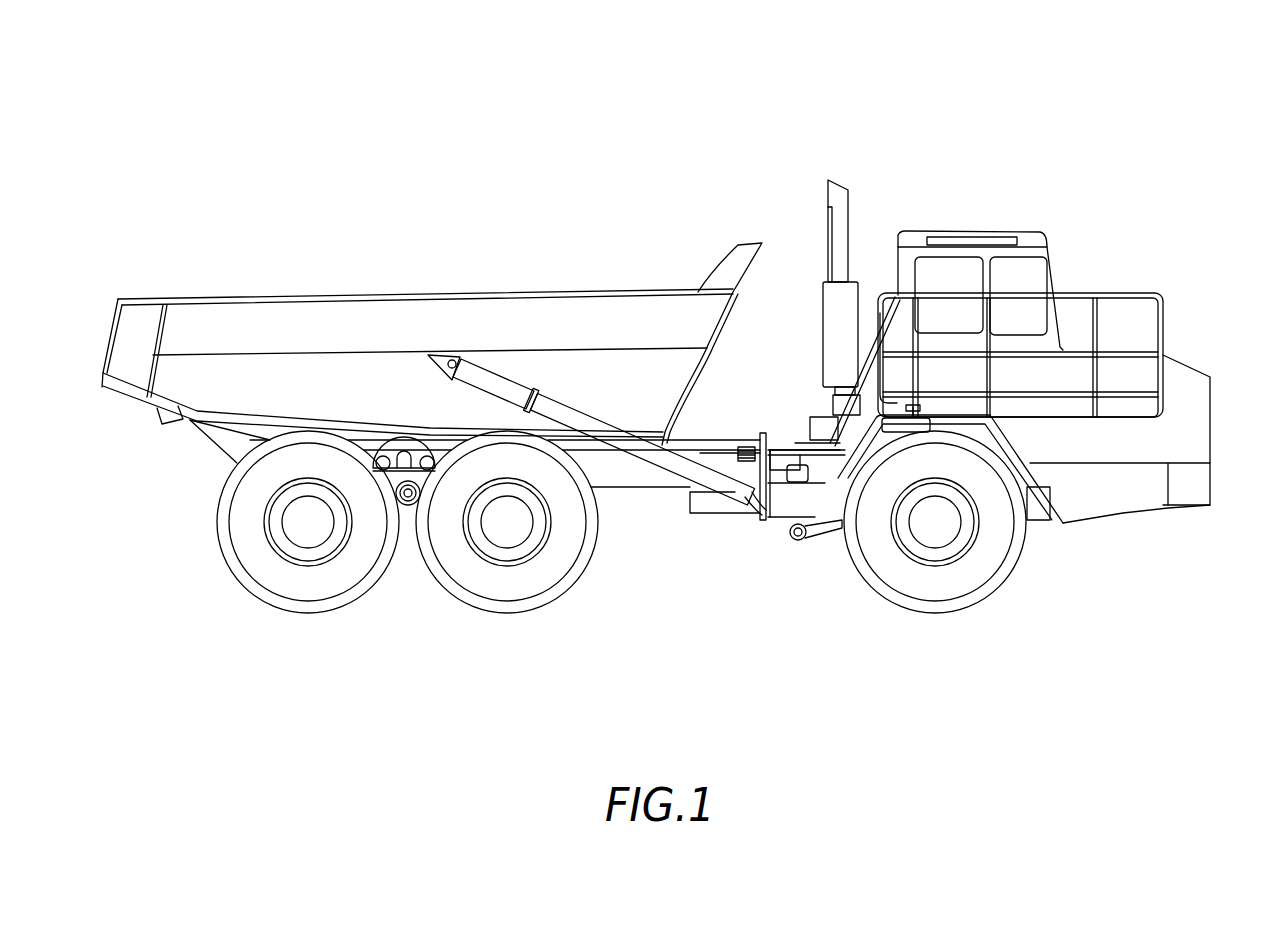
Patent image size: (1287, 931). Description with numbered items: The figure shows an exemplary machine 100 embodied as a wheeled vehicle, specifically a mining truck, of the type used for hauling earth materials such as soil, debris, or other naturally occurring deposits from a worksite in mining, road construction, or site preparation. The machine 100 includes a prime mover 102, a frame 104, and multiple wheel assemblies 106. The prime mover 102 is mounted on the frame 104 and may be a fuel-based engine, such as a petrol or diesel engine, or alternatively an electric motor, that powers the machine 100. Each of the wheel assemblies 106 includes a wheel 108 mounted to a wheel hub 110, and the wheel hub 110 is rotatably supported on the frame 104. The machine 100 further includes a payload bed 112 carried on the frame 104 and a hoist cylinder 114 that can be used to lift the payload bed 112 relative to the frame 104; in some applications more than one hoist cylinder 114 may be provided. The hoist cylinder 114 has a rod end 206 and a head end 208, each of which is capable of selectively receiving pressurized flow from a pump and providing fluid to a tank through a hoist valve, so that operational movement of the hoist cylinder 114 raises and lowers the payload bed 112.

The machine 100 is at (1172, 117).
The prime mover 102 is at (1098, 520).
The frame 104 is at (615, 477).
The wheel assemblies 106 is at (601, 575).
The wheel 108 is at (297, 613).
The wheel hub 110 is at (308, 522).
The payload bed 112 is at (408, 333).
The hoist cylinder 114 is at (661, 461).
The rod end 206 is at (490, 383).
The head end 208 is at (755, 500).